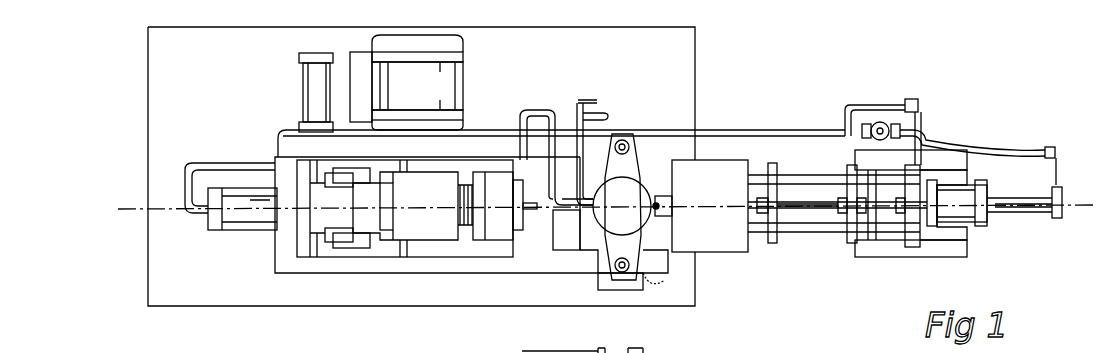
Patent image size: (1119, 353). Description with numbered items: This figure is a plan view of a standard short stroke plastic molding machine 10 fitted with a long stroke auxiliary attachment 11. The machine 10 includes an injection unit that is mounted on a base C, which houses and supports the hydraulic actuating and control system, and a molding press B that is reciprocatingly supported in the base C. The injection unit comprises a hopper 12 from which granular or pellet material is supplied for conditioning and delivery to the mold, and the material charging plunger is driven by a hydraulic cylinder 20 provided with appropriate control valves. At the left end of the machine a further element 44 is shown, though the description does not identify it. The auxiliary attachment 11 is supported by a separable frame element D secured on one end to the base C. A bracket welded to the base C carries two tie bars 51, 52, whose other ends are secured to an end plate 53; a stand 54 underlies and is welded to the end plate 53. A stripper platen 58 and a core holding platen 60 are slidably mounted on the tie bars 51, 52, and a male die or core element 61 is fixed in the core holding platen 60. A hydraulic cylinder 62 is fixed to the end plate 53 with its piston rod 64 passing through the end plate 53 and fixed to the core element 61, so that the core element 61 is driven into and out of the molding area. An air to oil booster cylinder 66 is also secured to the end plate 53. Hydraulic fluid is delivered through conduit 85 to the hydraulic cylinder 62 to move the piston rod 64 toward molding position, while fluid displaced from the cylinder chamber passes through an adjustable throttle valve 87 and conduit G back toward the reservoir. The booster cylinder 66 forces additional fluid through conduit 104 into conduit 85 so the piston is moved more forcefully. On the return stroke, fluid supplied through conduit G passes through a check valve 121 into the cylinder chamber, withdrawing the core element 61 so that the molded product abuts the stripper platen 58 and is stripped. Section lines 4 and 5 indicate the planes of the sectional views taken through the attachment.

The short stroke plastic molding machine 10 is at (634, 101).
The long stroke auxiliary attachment 11 is at (790, 101).
The hopper 12 is at (736, 239).
The cylinder 20 is at (637, 201).
The cylinder 44 is at (238, 222).
The tie bar 51 is at (813, 178).
The tie bar 52 is at (830, 233).
The end plate 53 is at (913, 248).
The stand 54 is at (960, 255).
The stripper platen 58 is at (769, 243).
The core holding platen 60 is at (852, 245).
The male die or core element 61 is at (788, 200).
The hydraulic cylinder 62 is at (1017, 213).
The piston rod 64 is at (890, 212).
The air to oil booster cylinder 66 is at (962, 214).
The conduit 85 is at (1034, 150).
The adjustable throttle valve 87 is at (877, 122).
The conduit 104 is at (1043, 216).
The check valve 121 is at (918, 102).
The section line 4 is at (882, 159).
The section line 5 is at (122, 217).
The molding press B is at (528, 222).
The base C is at (370, 267).
The frame element D is at (803, 240).
The conduit G is at (835, 128).